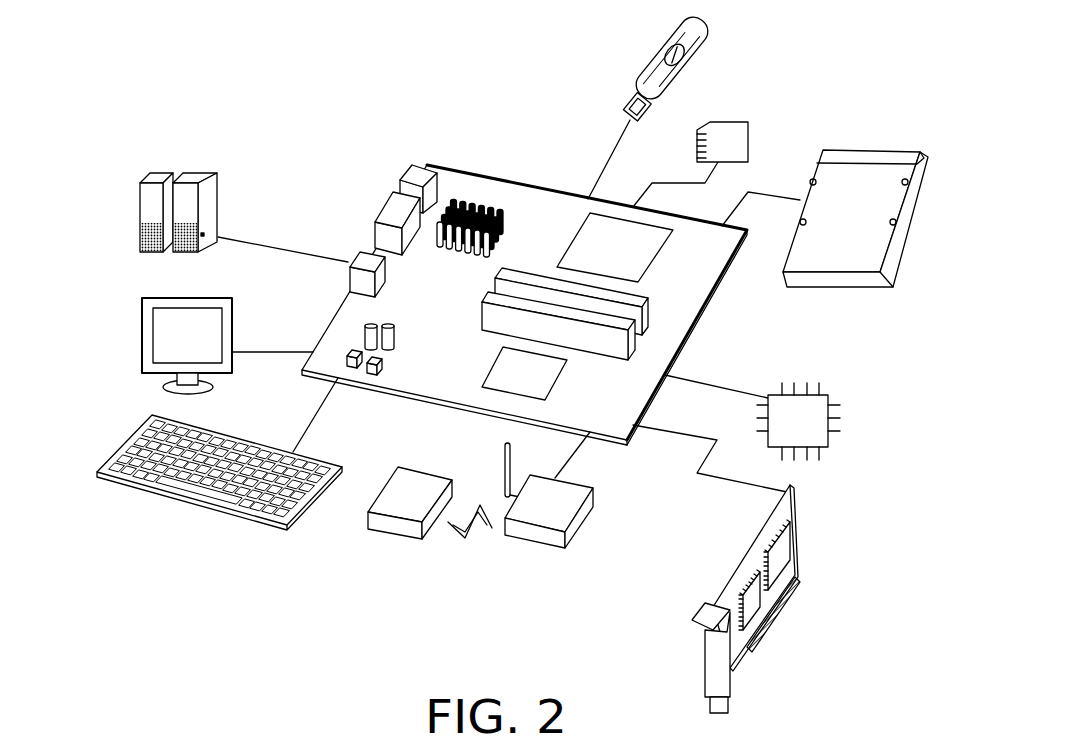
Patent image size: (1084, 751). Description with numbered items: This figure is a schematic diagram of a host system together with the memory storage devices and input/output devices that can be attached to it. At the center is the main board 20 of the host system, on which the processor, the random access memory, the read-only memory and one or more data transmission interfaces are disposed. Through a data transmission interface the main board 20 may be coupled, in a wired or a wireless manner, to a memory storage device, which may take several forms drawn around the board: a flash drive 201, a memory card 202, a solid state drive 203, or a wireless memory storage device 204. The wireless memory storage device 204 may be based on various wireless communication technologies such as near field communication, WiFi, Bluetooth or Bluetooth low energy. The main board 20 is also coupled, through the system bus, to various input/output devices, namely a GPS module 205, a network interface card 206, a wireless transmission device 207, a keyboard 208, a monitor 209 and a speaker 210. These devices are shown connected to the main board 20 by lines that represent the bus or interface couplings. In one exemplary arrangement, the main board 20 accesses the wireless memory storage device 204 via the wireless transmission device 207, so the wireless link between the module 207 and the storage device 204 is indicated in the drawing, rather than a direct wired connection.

The main board 20 is at (527, 207).
The flash drive 201 is at (652, 60).
The memory card 202 is at (750, 128).
The SSD (Solid State Drive) 203 is at (868, 152).
The wireless memory storage device 204 is at (387, 483).
The GPS (Global Positioning System) module 205 is at (837, 420).
The network interface card 206 is at (795, 543).
The wireless transmission device 207 is at (590, 527).
The keyboard 208 is at (223, 512).
The monitor 209 is at (142, 353).
The speaker 210 is at (140, 238).